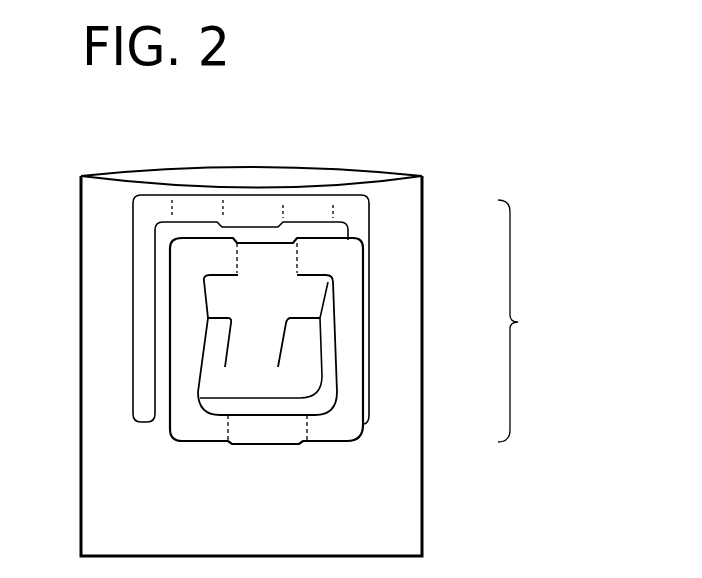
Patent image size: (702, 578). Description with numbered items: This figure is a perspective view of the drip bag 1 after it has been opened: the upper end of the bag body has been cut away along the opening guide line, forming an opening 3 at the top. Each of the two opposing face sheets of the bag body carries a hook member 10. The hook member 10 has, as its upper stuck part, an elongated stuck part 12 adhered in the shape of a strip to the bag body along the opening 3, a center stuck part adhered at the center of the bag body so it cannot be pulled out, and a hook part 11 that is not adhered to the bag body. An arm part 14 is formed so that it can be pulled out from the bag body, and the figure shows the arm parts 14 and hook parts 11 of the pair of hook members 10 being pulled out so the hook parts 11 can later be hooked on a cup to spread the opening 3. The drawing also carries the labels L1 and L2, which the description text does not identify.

The drip bag 1 is at (594, 543).
The opening 3 is at (272, 177).
The hook member 10 is at (525, 321).
The hook part 11 is at (343, 377).
The elongated stuck part 12 is at (315, 208).
The arm part 14 is at (275, 340).
The lead wire L1 is at (230, 208).
The lead wire L2 is at (175, 207).